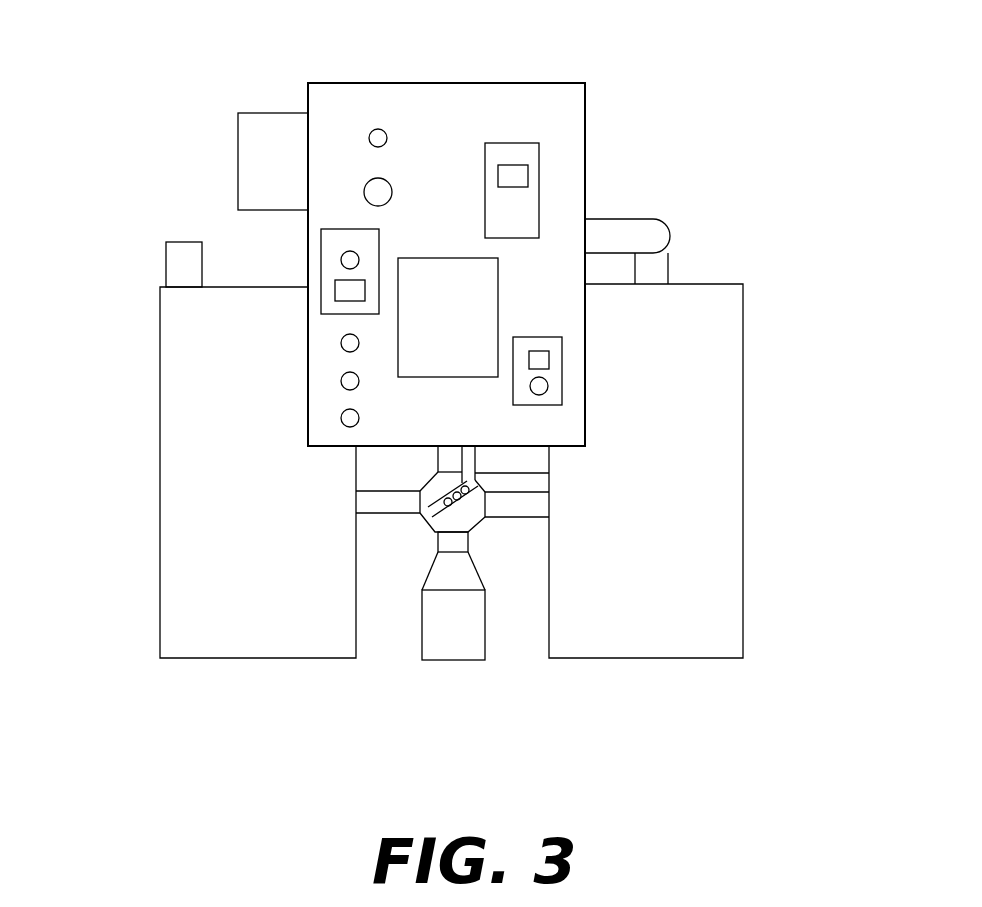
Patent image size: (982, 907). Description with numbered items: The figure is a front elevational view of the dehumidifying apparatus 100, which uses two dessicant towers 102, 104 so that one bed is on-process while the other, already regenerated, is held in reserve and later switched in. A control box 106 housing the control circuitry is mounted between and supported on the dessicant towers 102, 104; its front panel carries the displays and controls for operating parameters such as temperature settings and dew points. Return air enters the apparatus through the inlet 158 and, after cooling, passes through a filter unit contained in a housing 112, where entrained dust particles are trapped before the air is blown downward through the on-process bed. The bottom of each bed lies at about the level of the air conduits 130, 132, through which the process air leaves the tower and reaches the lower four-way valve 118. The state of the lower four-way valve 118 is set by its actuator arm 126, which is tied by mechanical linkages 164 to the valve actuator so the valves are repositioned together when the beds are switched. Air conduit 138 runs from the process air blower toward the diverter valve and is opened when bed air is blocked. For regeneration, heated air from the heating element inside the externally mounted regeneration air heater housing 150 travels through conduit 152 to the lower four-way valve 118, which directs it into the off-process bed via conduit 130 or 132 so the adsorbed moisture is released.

The dehumidifying apparatus 100 is at (607, 64).
The dessicant tower 102 is at (158, 613).
The dessicant tower 104 is at (743, 473).
The control box 106 is at (323, 82).
The housing 112 is at (238, 152).
The lower 4-way valve 118 is at (482, 522).
The actuator arm 126 is at (438, 473).
The air conduit 130 is at (383, 516).
The air conduit 132 is at (518, 510).
The air conduit 138 is at (627, 224).
The regeneration air heater housing 150 is at (443, 663).
The conduit 152 is at (470, 542).
The inlet 158 is at (166, 263).
The mechanical linkages 164 is at (475, 462).